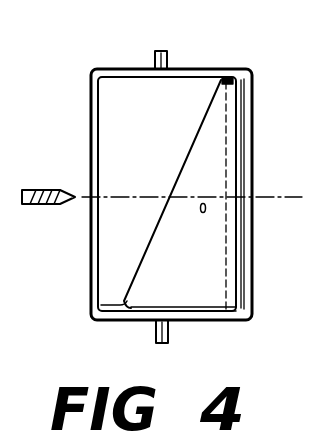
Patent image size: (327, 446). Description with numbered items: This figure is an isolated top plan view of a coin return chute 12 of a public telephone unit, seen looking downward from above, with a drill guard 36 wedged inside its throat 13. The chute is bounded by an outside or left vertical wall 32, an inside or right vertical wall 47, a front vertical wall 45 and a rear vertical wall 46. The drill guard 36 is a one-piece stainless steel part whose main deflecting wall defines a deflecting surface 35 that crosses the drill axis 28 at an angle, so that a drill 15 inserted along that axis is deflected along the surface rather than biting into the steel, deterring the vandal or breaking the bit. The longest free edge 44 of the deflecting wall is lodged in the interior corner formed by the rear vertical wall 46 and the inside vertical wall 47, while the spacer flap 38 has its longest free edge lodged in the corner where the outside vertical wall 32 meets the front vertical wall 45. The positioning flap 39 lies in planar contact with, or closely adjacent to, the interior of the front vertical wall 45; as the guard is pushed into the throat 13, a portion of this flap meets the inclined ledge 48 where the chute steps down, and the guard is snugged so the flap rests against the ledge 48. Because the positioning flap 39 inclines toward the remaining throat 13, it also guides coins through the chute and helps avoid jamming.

The coin return chute 12 is at (284, 46).
The throat 13 is at (172, 85).
The drill 15 is at (48, 189).
The drill axis 28 is at (106, 196).
The outside vertical wall 32 is at (90, 236).
The deflecting surface 35 is at (181, 138).
The drill guard 36 is at (152, 300).
The spacer flap 38 is at (104, 314).
The positioning flap 39 is at (195, 298).
The longest free edge 44 is at (229, 78).
The front vertical wall 45 is at (216, 323).
The rear vertical wall 46 is at (141, 50).
The inside vertical wall 47 is at (251, 173).
The inclined ledge 48 is at (232, 276).